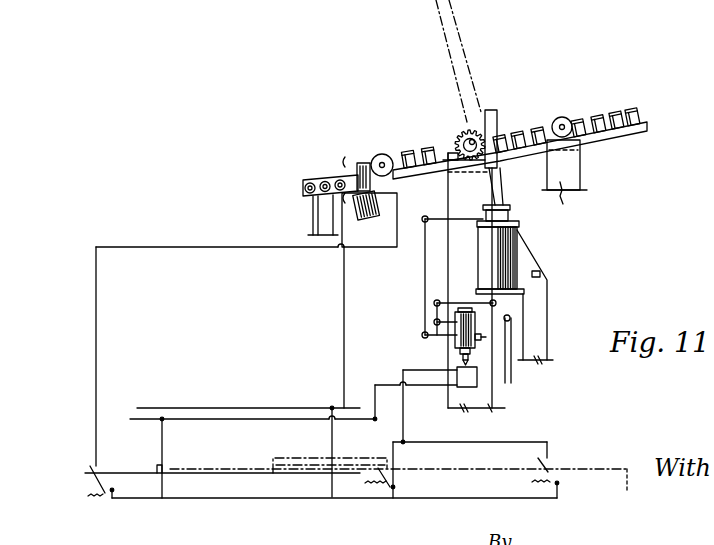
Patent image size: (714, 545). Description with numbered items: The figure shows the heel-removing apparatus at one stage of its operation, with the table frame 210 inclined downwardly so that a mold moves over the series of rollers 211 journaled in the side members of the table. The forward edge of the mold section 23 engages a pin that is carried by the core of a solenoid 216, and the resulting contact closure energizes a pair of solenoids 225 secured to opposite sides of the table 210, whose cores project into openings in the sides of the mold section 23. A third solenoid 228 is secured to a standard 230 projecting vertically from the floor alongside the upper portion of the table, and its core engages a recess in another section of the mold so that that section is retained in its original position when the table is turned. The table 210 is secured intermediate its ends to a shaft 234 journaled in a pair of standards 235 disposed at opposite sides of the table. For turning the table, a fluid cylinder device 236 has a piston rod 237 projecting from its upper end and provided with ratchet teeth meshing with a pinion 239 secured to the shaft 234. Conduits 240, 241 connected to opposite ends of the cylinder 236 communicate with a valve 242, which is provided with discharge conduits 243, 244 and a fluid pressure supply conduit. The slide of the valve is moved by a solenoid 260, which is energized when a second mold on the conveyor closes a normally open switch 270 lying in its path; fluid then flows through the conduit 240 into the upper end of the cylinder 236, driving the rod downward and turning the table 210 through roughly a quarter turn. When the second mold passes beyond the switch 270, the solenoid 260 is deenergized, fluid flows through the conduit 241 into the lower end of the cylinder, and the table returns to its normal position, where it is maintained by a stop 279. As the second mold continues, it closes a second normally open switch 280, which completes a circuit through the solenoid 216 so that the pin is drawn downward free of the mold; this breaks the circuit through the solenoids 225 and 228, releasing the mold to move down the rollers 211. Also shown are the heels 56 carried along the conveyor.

The mold section 23 is at (499, 118).
The cans 56 is at (633, 110).
The table frame 210 is at (647, 124).
The rollers 211 is at (311, 178).
The solenoid 216 is at (357, 220).
The solenoids 225 is at (383, 154).
The third solenoid 228 is at (573, 131).
The standard 230 is at (581, 176).
The shaft 234 is at (480, 131).
The standards 235 is at (453, 171).
The fluid cylinder device 236 is at (520, 231).
The piston rod 237 is at (504, 192).
The pinion 239 is at (467, 126).
The conduit 240 is at (424, 246).
The conduit 241 is at (454, 303).
The valve 242 is at (455, 346).
The discharge conduit 243 is at (437, 303).
The discharge conduit 244 is at (481, 338).
The solenoid 260 is at (464, 387).
The normally open switch 270 is at (378, 468).
The stop 279 is at (315, 211).
The second normally open switch 280 is at (98, 472).